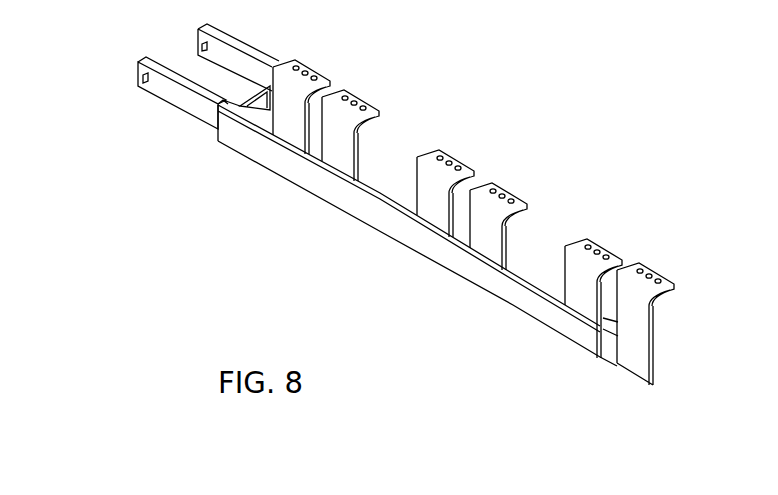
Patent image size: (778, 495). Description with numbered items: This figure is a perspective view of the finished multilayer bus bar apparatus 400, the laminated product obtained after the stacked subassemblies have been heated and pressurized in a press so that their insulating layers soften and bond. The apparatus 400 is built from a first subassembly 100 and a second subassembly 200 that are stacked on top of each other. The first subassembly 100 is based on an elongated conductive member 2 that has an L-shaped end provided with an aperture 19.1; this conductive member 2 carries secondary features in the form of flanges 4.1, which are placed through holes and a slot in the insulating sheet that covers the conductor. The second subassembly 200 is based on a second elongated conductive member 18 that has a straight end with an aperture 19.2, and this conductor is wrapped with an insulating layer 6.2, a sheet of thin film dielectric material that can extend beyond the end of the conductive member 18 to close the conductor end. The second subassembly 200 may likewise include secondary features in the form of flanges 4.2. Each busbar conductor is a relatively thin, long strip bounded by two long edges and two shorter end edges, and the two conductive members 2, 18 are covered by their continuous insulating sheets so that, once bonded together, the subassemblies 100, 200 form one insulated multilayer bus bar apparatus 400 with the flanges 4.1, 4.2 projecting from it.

The conductive member 2 is at (204, 44).
The aperture 19.1 is at (215, 45).
The aperture 19.2 is at (142, 78).
The conductive member 18 is at (143, 89).
The second subassembly 200 is at (215, 120).
The first subassembly 100 is at (272, 64).
The multilayer bus bar apparatus 400 is at (183, 260).
The flanges 4.1 is at (652, 262).
The flanges 4.2 is at (572, 308).
The insulating layer 6.2 is at (557, 321).